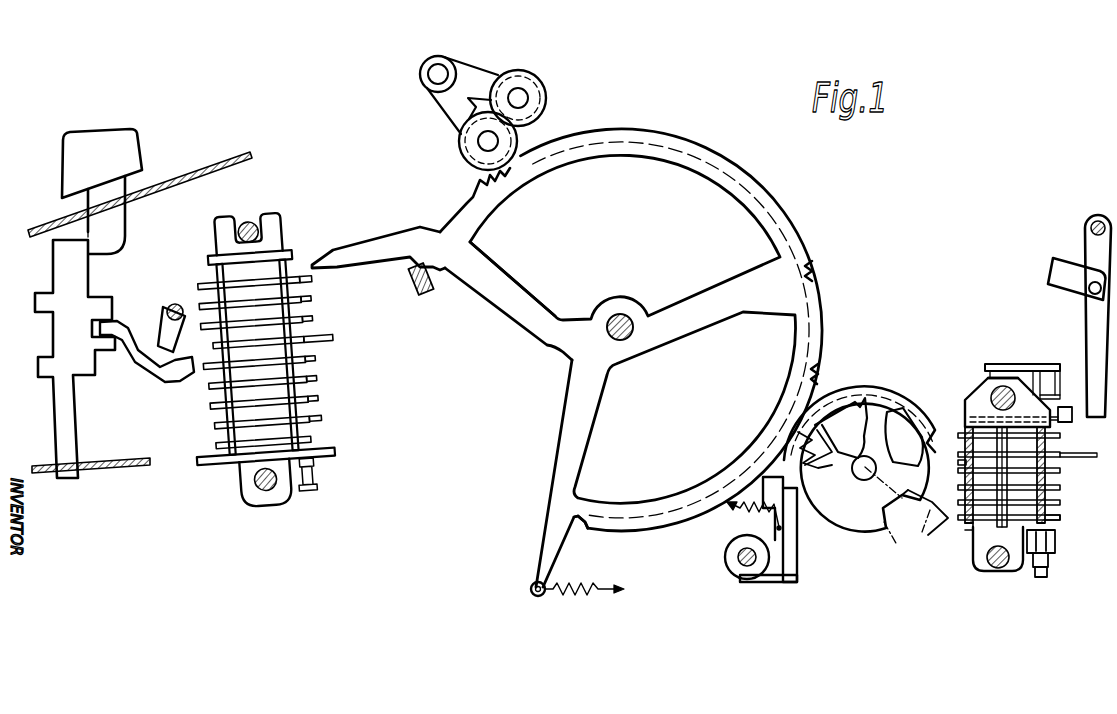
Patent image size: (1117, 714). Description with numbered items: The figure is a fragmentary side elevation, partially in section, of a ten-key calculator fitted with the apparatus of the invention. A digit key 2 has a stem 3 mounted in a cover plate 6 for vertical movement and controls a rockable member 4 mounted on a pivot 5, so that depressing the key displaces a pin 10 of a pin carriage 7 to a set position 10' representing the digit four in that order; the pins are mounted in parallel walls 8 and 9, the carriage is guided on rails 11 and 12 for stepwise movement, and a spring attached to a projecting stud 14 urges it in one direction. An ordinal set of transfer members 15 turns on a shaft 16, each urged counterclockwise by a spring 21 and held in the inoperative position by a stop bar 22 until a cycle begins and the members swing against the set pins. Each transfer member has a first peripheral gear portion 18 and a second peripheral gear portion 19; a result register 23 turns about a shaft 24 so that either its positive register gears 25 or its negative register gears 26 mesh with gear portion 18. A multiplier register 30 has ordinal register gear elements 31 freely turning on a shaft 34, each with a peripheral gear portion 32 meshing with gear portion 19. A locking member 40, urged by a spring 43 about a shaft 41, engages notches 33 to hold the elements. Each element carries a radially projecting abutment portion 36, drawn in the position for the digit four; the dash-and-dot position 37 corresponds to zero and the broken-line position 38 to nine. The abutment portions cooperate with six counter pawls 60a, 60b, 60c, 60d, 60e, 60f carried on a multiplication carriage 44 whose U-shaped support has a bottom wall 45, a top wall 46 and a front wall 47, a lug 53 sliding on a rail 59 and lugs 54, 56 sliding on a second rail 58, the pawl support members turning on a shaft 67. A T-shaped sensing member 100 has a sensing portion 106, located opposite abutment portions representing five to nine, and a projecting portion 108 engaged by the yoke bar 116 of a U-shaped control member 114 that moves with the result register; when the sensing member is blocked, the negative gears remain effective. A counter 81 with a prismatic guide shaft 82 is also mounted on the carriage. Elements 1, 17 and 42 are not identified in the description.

The supporting bracket 1 is at (58, 215).
The digit key 2 is at (126, 140).
The stem 3 is at (110, 236).
The rockable member 4 is at (146, 372).
The pivot 5 is at (175, 304).
The cover plate 6 is at (212, 170).
The pin carriage 7 is at (289, 236).
The parallel wall 8 is at (224, 446).
The parallel wall 9 is at (296, 402).
The pin 10 is at (318, 288).
The set position 10' is at (331, 325).
The rail 11 is at (250, 220).
The rail 12 is at (262, 492).
The projecting stud 14 is at (314, 486).
The transfer member 15 is at (470, 282).
The shaft 16 is at (620, 314).
The lever arm 17 is at (328, 261).
The first peripheral gear portion 18 is at (587, 134).
The second peripheral gear portion 19 is at (634, 524).
The spring 21 is at (577, 592).
The stop bar 22 is at (409, 278).
The result register 23 is at (477, 70).
The shaft 24 is at (421, 80).
The positive register gears 25 is at (543, 88).
The negative register gears 26 is at (458, 137).
The multiplier register 30 is at (861, 542).
The register gear element 31 is at (835, 498).
The peripheral gear portion 32 is at (860, 386).
The notch 33 is at (836, 431).
The shaft 34 is at (907, 507).
The abutment portion 36 is at (928, 512).
The abutment portion position 37 is at (897, 527).
The abutment portion position 38 is at (905, 400).
The locking member 40 is at (786, 583).
The shaft 41 is at (748, 567).
The ratchet teeth 42 is at (819, 456).
The spring 43 is at (740, 510).
The multiplication carriage 44 is at (964, 537).
The bottom wall 45 is at (960, 530).
The top wall 46 is at (985, 418).
The front wall 47 is at (958, 461).
The lug 53 is at (975, 562).
The lug 54 is at (982, 405).
The lug 56 is at (1000, 377).
The second rail 58 is at (1004, 388).
The rail 59 is at (1002, 570).
The counter pawl 60a is at (1061, 438).
The counter pawl 60b is at (1061, 472).
The counter pawl 60c is at (1061, 489).
The counter pawl 60d is at (1061, 504).
The counter pawl 60e is at (1061, 519).
The counter pawl 60f is at (1061, 521).
The shaft 67 is at (1031, 574).
The counter 81 is at (1066, 458).
The prismatic shaft 82 is at (1045, 364).
The sensing member 100 is at (1067, 405).
The sensing portion 106 is at (929, 434).
The projecting portion 108 is at (1073, 415).
The control member 114 is at (1088, 252).
The yoke bar 116 is at (1088, 400).